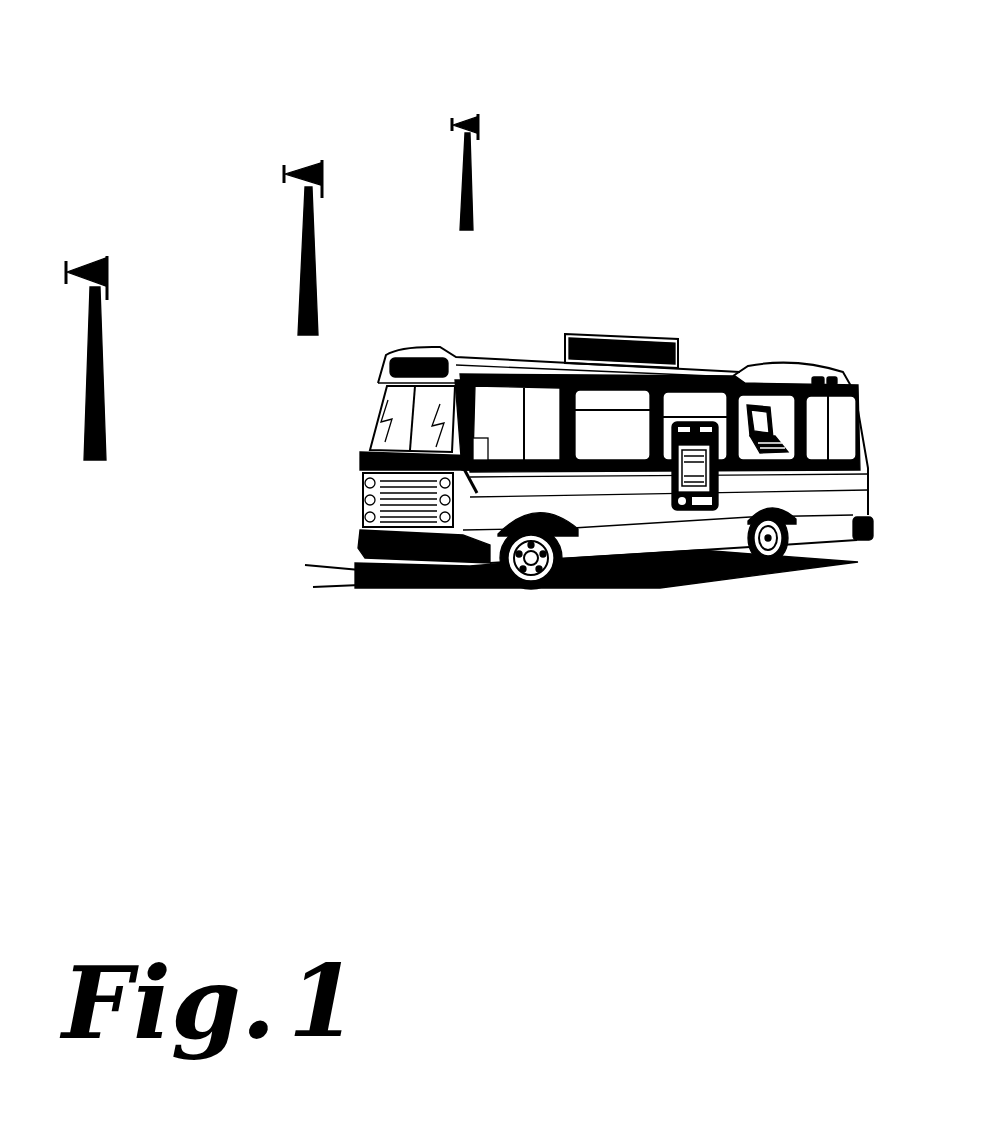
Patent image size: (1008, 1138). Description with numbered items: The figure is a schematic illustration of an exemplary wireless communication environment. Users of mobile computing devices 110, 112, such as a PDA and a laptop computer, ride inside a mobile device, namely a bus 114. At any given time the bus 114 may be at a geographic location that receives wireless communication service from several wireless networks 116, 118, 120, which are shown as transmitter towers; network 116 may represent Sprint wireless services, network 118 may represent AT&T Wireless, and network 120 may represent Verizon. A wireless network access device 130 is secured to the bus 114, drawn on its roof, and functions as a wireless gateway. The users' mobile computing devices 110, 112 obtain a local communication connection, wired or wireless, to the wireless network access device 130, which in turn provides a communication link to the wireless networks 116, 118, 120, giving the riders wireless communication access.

The mobile computing device 110 is at (712, 500).
The mobile computing device 112 is at (748, 385).
The bus 114 is at (824, 358).
The wireless network 116 is at (74, 262).
The wireless network 118 is at (318, 162).
The wireless network 120 is at (462, 117).
The wireless network access device 130 is at (606, 334).